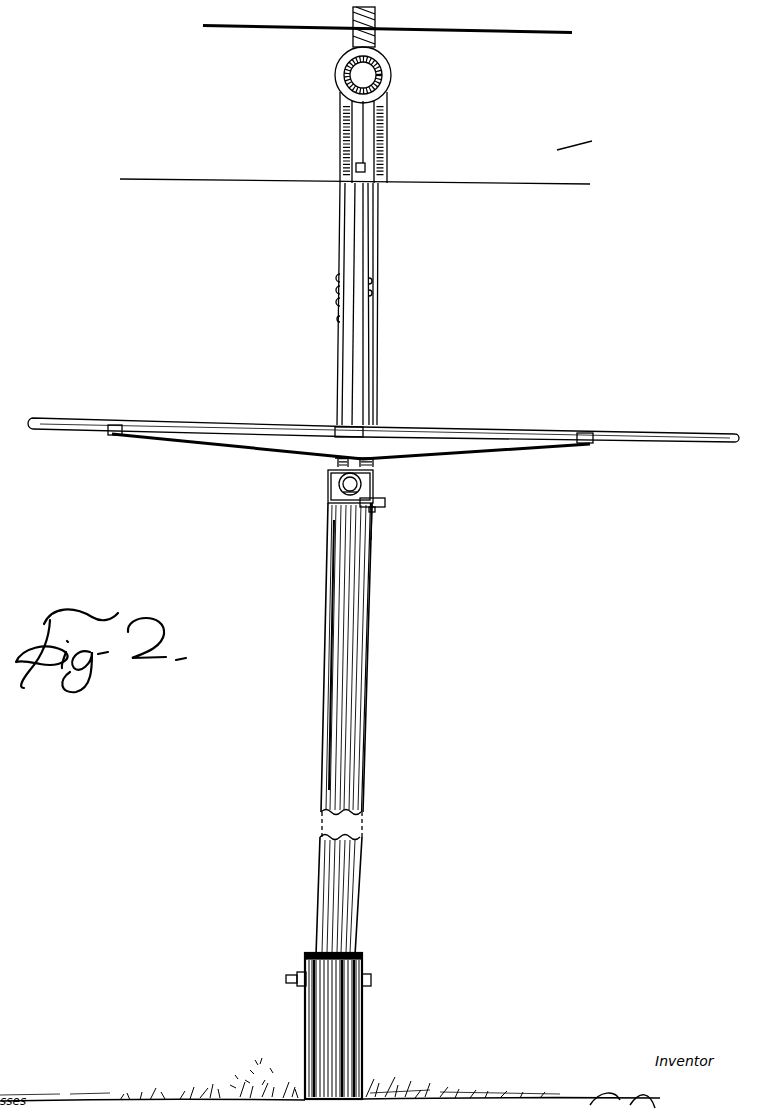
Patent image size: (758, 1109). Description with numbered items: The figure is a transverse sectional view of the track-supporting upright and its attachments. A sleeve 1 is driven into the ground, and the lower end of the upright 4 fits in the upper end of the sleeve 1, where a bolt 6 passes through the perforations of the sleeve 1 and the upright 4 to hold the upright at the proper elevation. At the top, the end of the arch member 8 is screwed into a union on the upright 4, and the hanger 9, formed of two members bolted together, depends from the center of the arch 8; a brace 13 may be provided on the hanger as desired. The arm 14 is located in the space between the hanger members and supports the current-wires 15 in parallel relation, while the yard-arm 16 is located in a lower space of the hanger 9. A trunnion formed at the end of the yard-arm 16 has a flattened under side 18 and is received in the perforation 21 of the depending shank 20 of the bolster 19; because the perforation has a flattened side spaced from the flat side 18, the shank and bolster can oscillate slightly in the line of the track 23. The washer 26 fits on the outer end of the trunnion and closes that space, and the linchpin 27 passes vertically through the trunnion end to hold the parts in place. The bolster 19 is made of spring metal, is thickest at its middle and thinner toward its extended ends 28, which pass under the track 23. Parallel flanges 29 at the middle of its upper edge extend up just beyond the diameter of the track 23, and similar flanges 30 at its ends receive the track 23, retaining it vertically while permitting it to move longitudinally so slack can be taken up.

The sleeve 1 is at (363, 1015).
The upright 4 is at (367, 707).
The bolt 6 is at (295, 976).
The arch member 8 is at (385, 121).
The hanger 9 is at (355, 213).
The brace 13 is at (338, 305).
The arm 14 is at (355, 165).
The current-wire 15 is at (527, 182).
The yard-arm 16 is at (378, 510).
The flattened under side 18 is at (333, 505).
The bolster 19 is at (340, 450).
The depending shank 20 is at (343, 479).
The perforation 21 is at (372, 481).
The track 23 is at (153, 425).
The washer 26 is at (353, 486).
The linchpin 27 is at (372, 535).
The extended end 28 is at (235, 441).
The center clip 29 is at (377, 426).
The flange 30 is at (108, 435).